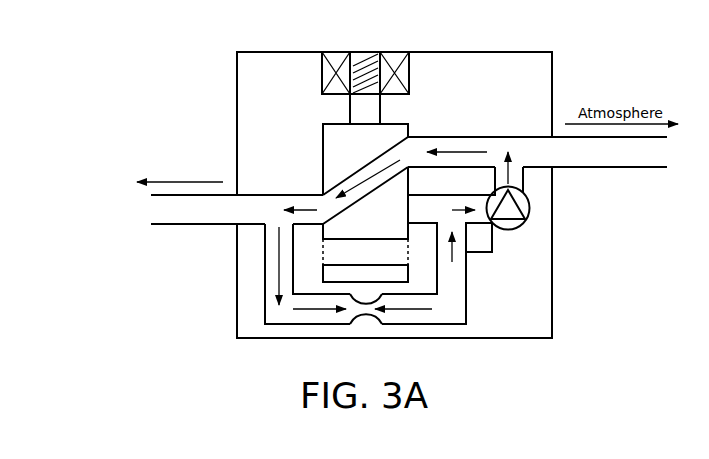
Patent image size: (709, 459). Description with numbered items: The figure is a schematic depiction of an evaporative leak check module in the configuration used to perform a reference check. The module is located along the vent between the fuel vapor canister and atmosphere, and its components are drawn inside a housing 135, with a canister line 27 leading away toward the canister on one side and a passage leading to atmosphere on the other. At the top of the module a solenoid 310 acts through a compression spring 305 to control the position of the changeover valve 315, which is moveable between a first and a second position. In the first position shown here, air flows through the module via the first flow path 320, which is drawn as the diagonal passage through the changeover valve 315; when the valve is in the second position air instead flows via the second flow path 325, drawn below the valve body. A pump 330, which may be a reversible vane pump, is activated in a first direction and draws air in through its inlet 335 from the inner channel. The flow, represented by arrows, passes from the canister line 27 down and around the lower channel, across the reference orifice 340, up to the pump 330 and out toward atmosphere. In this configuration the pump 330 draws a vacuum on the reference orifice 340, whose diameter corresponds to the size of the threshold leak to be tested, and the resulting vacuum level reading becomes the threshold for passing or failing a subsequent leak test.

The housing 135 is at (266, 52).
The compression spring 305 is at (363, 52).
The solenoid 310 is at (393, 52).
The changeover valve 315 is at (333, 124).
The first flow path 320 is at (370, 163).
The second flow path 325 is at (402, 239).
The pump 330 is at (528, 222).
The pump inlet 335 is at (494, 252).
The reference orifice 340 is at (379, 315).
The canister line 27 is at (193, 224).